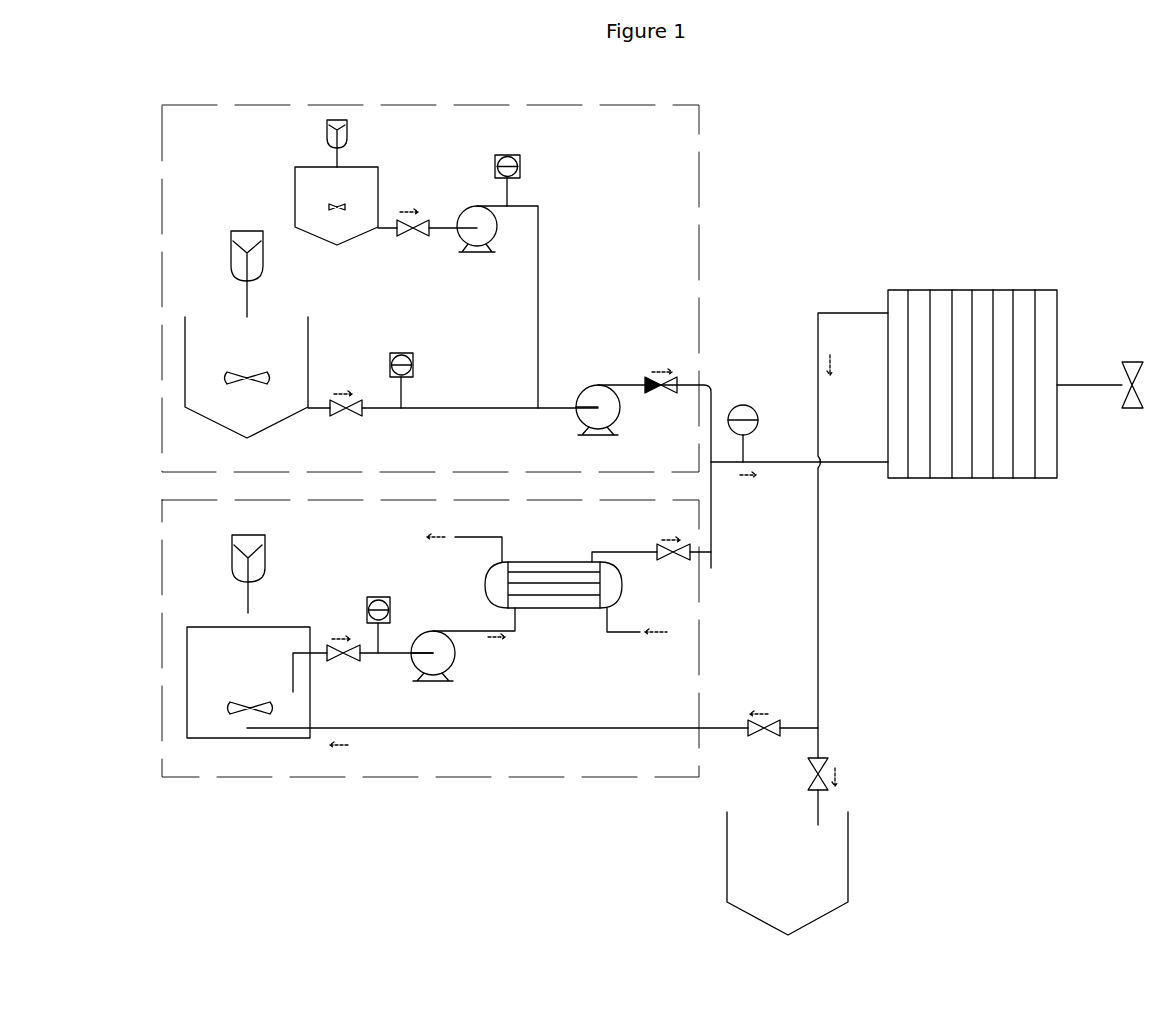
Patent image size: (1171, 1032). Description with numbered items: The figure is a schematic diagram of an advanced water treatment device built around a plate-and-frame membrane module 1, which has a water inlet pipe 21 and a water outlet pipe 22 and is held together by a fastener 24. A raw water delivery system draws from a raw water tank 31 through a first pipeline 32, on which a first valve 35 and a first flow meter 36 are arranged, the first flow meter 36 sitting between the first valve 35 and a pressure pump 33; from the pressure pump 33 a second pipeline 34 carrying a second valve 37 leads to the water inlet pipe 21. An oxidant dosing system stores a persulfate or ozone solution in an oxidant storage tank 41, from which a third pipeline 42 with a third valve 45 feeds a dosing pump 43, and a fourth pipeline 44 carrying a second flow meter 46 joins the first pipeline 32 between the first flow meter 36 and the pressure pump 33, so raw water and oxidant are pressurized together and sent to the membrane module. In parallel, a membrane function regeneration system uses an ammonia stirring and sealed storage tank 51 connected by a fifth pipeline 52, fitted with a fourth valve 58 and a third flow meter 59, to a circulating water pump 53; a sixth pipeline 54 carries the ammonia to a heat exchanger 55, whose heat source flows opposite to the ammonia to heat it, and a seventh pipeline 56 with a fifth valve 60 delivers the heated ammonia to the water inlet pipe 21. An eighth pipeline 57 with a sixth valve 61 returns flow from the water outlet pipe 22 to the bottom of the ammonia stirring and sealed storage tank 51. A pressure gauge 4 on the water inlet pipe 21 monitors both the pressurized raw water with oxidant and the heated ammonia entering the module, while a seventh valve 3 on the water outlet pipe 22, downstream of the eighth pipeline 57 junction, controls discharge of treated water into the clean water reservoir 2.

The plate-and-frame membrane module 1 is at (983, 478).
The clean water reservoir 2 is at (848, 862).
The seventh valve 3 is at (828, 760).
The pressure gauge 4 is at (748, 406).
The water inlet pipe 21 is at (783, 464).
The water outlet pipe 22 is at (818, 568).
The fastener 24 is at (1138, 396).
The raw water tank 31 is at (207, 418).
The first pipeline 32 is at (465, 410).
The pressure pump 33 is at (591, 435).
The second pipeline 34 is at (625, 385).
The first valve 35 is at (338, 416).
The first flow meter 36 is at (402, 353).
The second valve 37 is at (667, 393).
The oxidant storage tank 41 is at (295, 195).
The third pipeline 42 is at (444, 226).
The dosing pump 43 is at (477, 252).
The fourth pipeline 44 is at (538, 268).
The third valve 45 is at (410, 234).
The second flow meter 46 is at (520, 165).
The ammonia stirring and sealed storage tank 51 is at (215, 738).
The fifth pipeline 52 is at (384, 656).
The circulating water pump 53 is at (450, 666).
The sixth pipeline 54 is at (510, 634).
The heat exchanger 55 is at (557, 609).
The seventh pipeline 56 is at (625, 552).
The eighth pipeline 57 is at (532, 730).
The fourth valve 58 is at (333, 661).
The third flow meter 59 is at (378, 597).
The fifth valve 60 is at (665, 561).
The sixth valve 61 is at (753, 736).